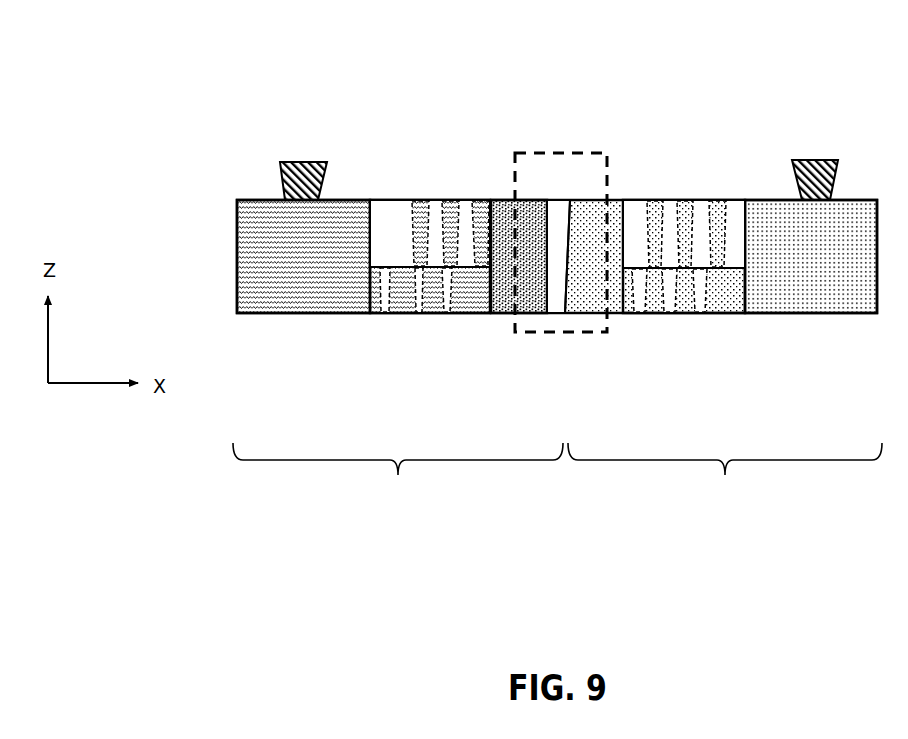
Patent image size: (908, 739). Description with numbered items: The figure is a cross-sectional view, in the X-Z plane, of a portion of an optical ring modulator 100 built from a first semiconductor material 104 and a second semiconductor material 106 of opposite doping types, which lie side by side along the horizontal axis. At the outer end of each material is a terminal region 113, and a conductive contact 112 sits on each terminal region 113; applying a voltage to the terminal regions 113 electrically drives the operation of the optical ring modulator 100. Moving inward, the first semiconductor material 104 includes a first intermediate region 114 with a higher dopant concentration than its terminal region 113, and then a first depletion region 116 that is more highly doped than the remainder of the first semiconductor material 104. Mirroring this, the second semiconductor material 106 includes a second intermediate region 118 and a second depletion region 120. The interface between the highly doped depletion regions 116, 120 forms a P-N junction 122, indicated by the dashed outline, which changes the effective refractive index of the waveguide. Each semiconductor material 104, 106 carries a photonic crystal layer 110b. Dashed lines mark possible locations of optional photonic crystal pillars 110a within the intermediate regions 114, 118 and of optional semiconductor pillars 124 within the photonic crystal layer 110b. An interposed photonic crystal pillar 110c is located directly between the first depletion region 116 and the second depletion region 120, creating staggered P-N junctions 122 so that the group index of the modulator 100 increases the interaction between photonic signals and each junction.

The optical ring modulator 100 is at (278, 115).
The first semiconductor material 104 is at (398, 477).
The second semiconductor material 106 is at (725, 478).
The photonic crystal pillars 110a is at (448, 302).
The photonic crystal layer 110b is at (390, 202).
The interposed photonic crystal pillars 110c is at (560, 210).
The conductive contact 112 is at (310, 160).
The terminal region 113 is at (281, 300).
The first intermediate region 114 is at (397, 315).
The first depletion region 116 is at (525, 310).
The second intermediate region 118 is at (733, 303).
The second depletion region 120 is at (618, 293).
The P-N junction 122 is at (530, 152).
The semiconductor pillars 124 is at (423, 202).